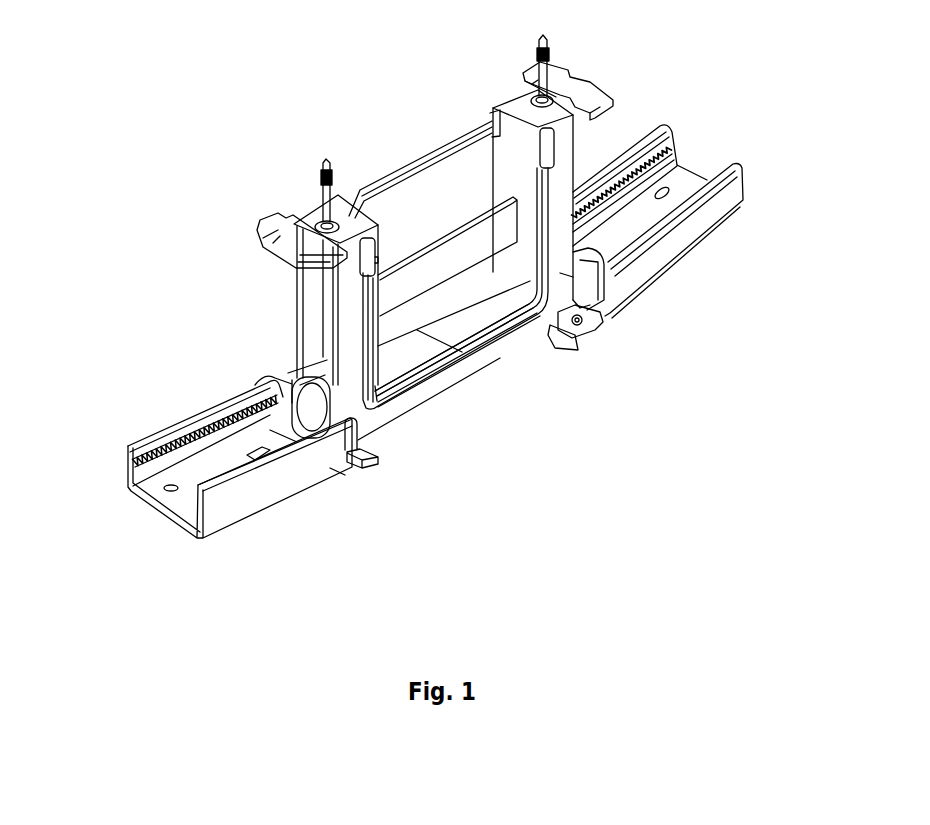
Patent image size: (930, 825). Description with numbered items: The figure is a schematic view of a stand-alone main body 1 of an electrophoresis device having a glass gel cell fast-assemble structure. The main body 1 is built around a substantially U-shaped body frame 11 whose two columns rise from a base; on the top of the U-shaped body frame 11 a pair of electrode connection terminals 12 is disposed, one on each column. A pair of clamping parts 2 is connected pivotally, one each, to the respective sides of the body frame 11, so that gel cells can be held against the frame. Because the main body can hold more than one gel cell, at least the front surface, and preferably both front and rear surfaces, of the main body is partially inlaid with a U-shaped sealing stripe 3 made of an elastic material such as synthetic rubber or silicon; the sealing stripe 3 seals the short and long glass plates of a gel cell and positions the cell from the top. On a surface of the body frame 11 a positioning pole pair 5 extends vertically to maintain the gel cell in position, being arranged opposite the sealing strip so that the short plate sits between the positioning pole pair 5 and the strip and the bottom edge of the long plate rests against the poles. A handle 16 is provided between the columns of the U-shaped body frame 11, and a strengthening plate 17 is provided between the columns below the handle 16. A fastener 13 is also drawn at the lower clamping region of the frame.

The main body 1 is at (267, 220).
The clamping parts 2 is at (723, 197).
The U-shaped sealing stripe 3 is at (507, 337).
The positioning pole pair 5 is at (580, 330).
The U-shaped body frame 11 is at (567, 207).
The electrode connection terminals 12 is at (322, 192).
The fastening screw 13 is at (590, 323).
The handle 16 is at (463, 132).
The cross bar 17 is at (430, 263).